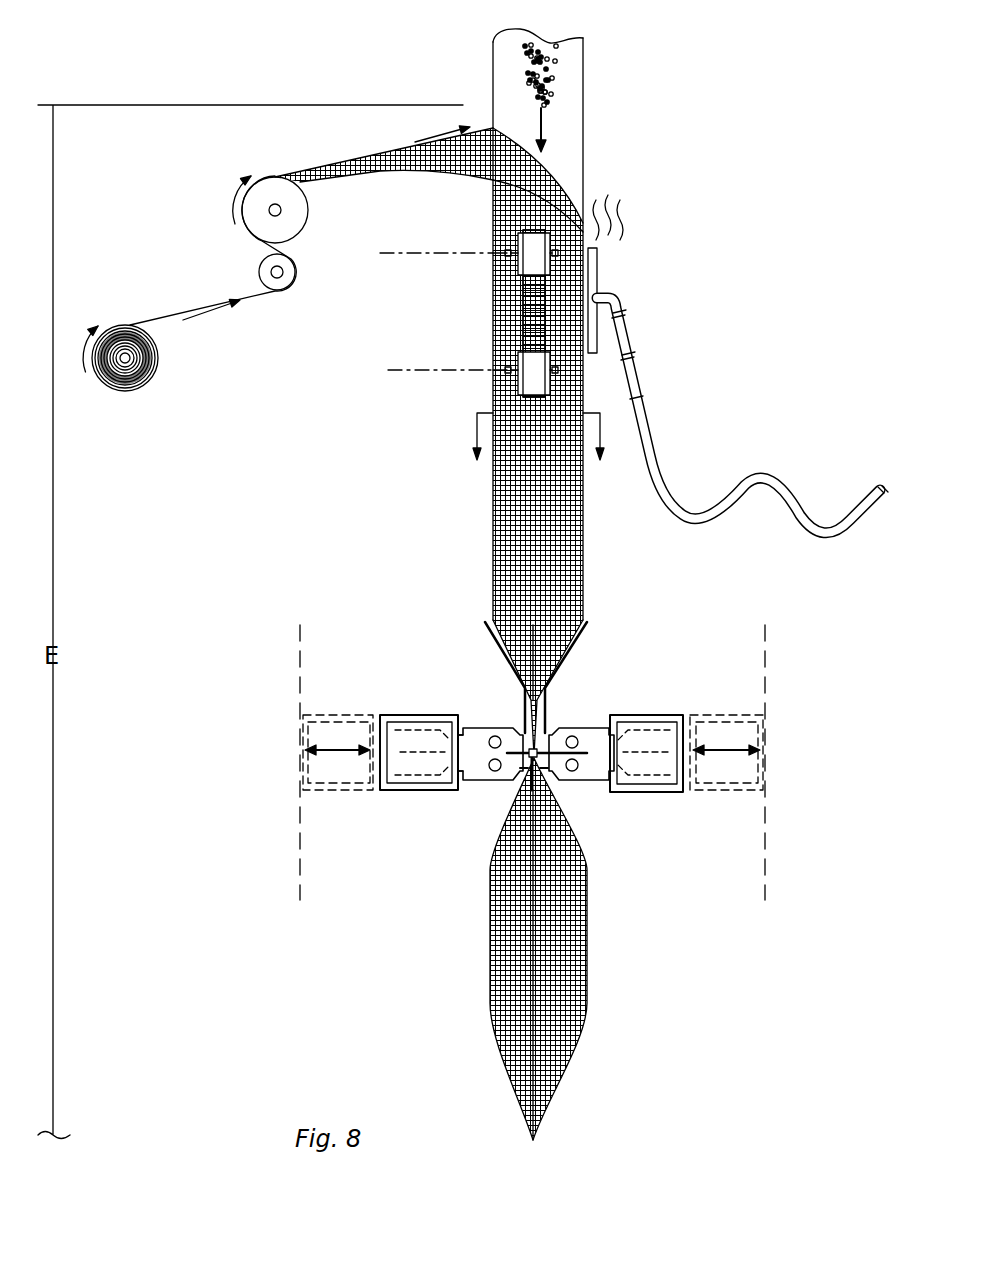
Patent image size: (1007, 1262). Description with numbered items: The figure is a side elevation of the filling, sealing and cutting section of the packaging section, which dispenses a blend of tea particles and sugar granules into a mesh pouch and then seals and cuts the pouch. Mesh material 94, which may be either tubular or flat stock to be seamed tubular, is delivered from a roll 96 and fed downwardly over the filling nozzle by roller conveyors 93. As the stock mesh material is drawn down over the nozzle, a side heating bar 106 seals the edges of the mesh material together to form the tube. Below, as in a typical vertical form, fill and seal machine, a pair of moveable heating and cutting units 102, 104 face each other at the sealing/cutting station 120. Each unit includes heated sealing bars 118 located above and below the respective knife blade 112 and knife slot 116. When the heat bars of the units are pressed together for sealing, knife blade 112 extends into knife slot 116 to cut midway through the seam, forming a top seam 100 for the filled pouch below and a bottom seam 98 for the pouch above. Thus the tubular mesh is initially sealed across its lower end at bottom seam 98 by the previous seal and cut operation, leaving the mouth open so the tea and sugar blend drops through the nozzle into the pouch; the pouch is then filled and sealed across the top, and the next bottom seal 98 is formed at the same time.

The roller conveyors 93 is at (530, 318).
The tubular roll of mesh material 94 is at (440, 176).
The roll 96 is at (157, 365).
The bottom seam 98 is at (543, 718).
The top seam 100 is at (548, 775).
The heating and cutting unit 102 is at (405, 792).
The heating and cutting unit 104 is at (668, 716).
The side heating bar 106 is at (598, 268).
The knife blade 112 is at (510, 753).
The knife slot 116 is at (578, 750).
The heated sealing bars 118 is at (522, 768).
The sealing/cutting station 120 is at (437, 678).